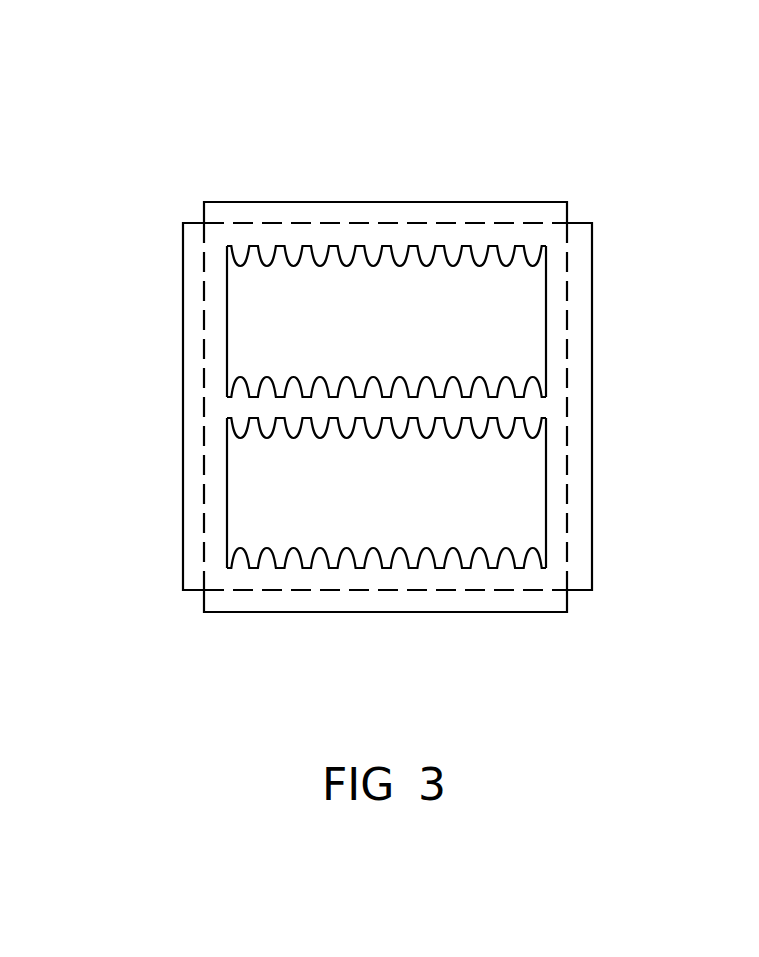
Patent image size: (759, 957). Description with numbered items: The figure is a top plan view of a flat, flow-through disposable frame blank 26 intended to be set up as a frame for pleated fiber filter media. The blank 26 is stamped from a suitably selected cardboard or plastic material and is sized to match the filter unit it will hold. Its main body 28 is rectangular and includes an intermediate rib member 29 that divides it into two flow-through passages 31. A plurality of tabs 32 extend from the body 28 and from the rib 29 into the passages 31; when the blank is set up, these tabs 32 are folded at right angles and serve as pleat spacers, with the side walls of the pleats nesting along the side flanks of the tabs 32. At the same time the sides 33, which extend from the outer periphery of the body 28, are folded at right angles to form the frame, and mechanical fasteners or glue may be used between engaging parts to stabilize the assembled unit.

The disposable frame blank 26 is at (461, 406).
The main body 28 is at (472, 235).
The intermediate rib member 29 is at (405, 410).
The flow-through passages 31 is at (386, 407).
The tabs 32 is at (295, 265).
The sides 33 is at (303, 213).